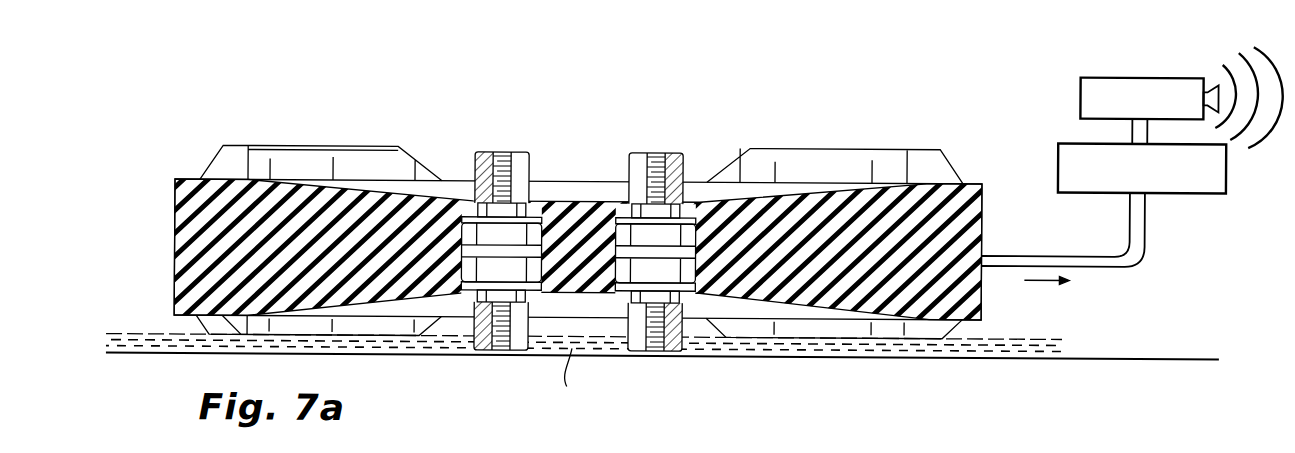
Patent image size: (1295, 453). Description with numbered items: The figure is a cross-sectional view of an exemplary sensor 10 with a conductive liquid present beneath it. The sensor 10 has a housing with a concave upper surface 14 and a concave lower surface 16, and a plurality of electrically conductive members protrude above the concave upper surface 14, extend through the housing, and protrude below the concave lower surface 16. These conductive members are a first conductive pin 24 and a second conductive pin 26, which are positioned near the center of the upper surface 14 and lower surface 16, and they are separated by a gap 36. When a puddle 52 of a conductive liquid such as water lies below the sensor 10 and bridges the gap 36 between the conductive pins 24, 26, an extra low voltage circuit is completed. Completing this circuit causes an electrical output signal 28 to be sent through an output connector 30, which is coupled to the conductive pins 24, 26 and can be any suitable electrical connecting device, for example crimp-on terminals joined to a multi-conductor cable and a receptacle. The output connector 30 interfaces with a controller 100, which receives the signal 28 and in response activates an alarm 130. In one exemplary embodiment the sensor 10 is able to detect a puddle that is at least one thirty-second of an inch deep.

The sensor 10 is at (252, 113).
The concave upper surface 14 is at (750, 182).
The concave lower surface 16 is at (727, 300).
The first conductive pin 24 is at (503, 150).
The second conductive pin 26 is at (660, 150).
The electrical output signal 28 is at (1041, 277).
The output connector 30 is at (1038, 251).
The gap 36 is at (578, 372).
The puddle 52 is at (843, 350).
The controller 100 is at (1058, 152).
The alarm 130 is at (1080, 89).